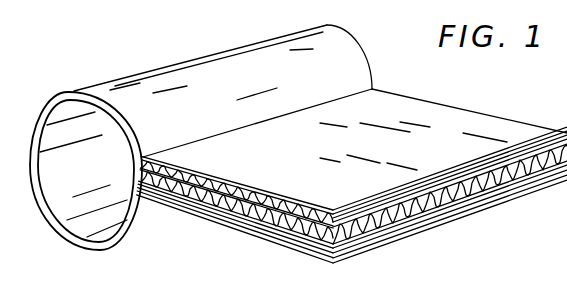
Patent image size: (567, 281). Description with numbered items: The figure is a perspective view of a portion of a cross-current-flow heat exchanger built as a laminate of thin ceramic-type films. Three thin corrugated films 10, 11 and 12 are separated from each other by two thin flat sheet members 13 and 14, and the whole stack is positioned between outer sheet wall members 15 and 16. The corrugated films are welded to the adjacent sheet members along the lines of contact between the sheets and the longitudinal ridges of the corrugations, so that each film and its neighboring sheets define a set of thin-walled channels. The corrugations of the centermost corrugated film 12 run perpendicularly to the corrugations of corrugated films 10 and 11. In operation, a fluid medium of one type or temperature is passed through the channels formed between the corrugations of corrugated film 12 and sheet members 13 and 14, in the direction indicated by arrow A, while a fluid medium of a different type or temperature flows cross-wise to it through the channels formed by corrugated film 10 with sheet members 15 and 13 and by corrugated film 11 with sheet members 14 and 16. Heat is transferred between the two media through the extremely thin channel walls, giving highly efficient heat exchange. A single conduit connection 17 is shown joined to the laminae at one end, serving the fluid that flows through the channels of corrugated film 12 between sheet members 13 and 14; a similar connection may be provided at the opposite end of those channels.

The corrugated film 10 is at (267, 195).
The corrugated film 11 is at (279, 243).
The corrugated film 12 is at (370, 230).
The flat sheet member 13 is at (237, 192).
The flat sheet member 14 is at (263, 230).
The outer sheet wall member 15 is at (192, 173).
The outer sheet wall member 16 is at (228, 226).
The conduit connection 17 is at (71, 98).
The arrow A is at (445, 198).